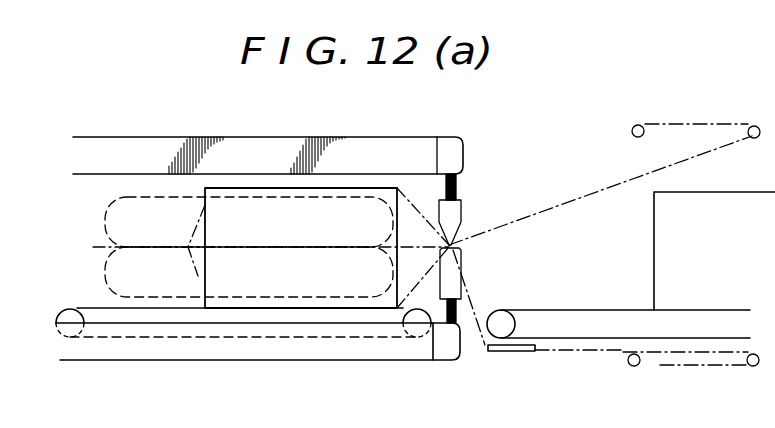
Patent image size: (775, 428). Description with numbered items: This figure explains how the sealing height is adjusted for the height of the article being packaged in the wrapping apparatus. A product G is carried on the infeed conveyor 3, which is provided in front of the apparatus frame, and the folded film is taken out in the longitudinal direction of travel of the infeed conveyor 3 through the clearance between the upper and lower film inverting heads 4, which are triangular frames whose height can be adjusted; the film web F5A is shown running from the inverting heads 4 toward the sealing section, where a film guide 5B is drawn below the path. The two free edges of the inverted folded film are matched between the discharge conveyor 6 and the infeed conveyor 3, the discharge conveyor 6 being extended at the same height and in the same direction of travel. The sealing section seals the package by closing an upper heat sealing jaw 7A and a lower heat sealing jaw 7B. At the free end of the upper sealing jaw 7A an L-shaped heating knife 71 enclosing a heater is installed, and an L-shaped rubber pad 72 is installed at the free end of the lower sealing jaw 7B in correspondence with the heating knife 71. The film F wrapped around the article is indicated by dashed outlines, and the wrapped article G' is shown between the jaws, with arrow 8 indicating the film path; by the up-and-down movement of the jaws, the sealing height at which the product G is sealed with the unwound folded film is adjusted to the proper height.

The arrow indicating film feed 8 is at (162, 190).
The upper heat sealing jaw 7A is at (464, 152).
The L-shaped heating knife 71 is at (461, 210).
The L-shaped rubber pad 72 is at (461, 283).
The lower heat sealing jaw 7B is at (461, 350).
The selvage of film F is at (100, 248).
The discharge conveyor 6 is at (100, 310).
The wrapped article G' is at (318, 291).
The product G is at (714, 251).
The infeed conveyor 3 is at (600, 309).
The lower film guide plate 5B is at (592, 354).
The upper film web F5A is at (584, 196).
The film inverting head 4 is at (748, 126).